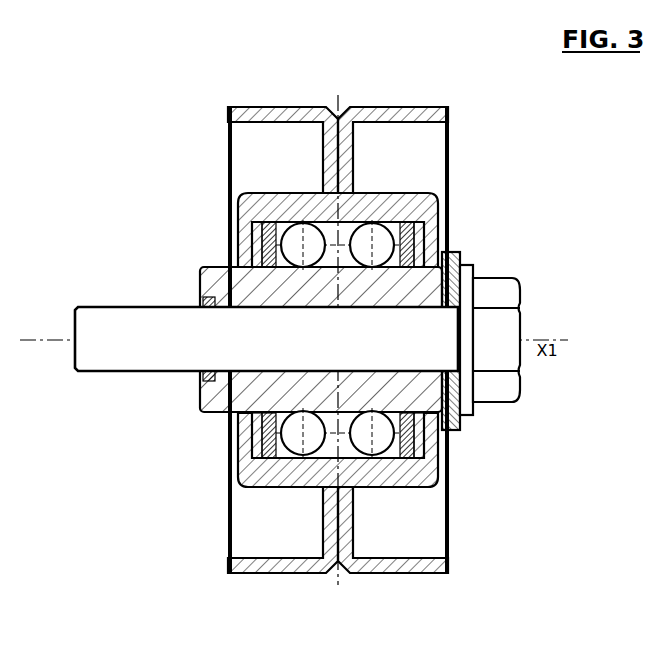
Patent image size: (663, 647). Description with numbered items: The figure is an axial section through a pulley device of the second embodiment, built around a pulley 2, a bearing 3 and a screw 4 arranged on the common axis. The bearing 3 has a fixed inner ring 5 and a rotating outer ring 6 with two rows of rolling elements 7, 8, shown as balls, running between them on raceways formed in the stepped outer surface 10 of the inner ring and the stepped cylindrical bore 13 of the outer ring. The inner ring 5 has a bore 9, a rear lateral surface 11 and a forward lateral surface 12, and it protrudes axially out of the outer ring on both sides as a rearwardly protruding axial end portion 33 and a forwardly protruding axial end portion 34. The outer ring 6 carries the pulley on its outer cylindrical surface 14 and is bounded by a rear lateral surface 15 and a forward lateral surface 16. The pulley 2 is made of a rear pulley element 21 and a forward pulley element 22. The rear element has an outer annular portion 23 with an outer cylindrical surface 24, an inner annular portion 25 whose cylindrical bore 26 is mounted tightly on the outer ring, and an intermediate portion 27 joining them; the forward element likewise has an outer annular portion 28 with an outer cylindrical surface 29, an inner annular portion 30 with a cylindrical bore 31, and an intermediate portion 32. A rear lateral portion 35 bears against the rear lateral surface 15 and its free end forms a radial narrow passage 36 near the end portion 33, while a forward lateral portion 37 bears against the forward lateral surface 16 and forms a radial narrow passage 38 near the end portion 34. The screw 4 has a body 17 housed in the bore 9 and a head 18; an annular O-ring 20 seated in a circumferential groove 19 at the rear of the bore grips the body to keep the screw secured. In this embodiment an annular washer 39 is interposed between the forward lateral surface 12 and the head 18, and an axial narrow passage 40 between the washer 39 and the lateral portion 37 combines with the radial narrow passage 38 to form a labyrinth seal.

The pulley 2 is at (336, 293).
The bearing 3 is at (374, 345).
The screw 4 is at (90, 380).
The fixed inner ring 5 is at (200, 413).
The rotating outer ring 6 is at (378, 462).
The rolling elements 7 is at (297, 254).
The rolling elements 8 is at (366, 254).
The bore 9 is at (450, 333).
The stepped outer surface 10 is at (252, 440).
The rear lateral surface 11 is at (205, 400).
The forward lateral surface 12 is at (520, 400).
The stepped cylindrical bore 13 is at (460, 428).
The outer cylindrical surface 14 is at (447, 497).
The rear lateral surface 15 is at (240, 202).
The forward lateral surface 16 is at (440, 204).
The body 17 is at (74, 365).
The head 18 is at (495, 279).
The circumferential groove 19 is at (205, 325).
The annular O-ring 20 is at (205, 378).
The rear pulley element 21 is at (307, 105).
The forward pulley element 22 is at (358, 105).
The outer annular portion 23 is at (278, 114).
The outer cylindrical surface 24 is at (246, 106).
The inner annular portion 25 is at (300, 162).
The cylindrical bore 26 is at (258, 236).
The intermediate portion 27 is at (300, 142).
The outer annular portion 28 is at (392, 114).
The outer cylindrical surface 29 is at (440, 106).
The inner annular portion 30 is at (400, 160).
The cylindrical bore 31 is at (449, 252).
The intermediate portion 32 is at (400, 142).
The rearwardly protruding axial end portion 33 is at (200, 268).
The forwardly protruding axial end portion 34 is at (470, 386).
The rear lateral portion 35 is at (246, 262).
The radial narrow passage 36 is at (203, 300).
The forward lateral portion 37 is at (452, 256).
The radial narrow passage 38 is at (515, 293).
The annular washer 39 is at (468, 264).
The axial narrow passage 40 is at (450, 438).